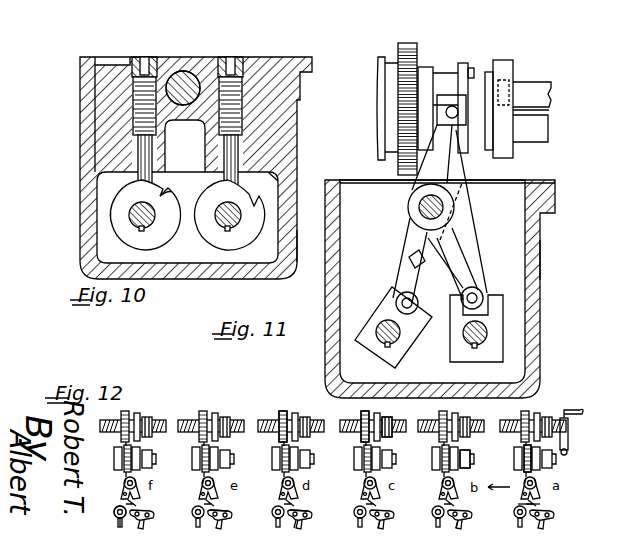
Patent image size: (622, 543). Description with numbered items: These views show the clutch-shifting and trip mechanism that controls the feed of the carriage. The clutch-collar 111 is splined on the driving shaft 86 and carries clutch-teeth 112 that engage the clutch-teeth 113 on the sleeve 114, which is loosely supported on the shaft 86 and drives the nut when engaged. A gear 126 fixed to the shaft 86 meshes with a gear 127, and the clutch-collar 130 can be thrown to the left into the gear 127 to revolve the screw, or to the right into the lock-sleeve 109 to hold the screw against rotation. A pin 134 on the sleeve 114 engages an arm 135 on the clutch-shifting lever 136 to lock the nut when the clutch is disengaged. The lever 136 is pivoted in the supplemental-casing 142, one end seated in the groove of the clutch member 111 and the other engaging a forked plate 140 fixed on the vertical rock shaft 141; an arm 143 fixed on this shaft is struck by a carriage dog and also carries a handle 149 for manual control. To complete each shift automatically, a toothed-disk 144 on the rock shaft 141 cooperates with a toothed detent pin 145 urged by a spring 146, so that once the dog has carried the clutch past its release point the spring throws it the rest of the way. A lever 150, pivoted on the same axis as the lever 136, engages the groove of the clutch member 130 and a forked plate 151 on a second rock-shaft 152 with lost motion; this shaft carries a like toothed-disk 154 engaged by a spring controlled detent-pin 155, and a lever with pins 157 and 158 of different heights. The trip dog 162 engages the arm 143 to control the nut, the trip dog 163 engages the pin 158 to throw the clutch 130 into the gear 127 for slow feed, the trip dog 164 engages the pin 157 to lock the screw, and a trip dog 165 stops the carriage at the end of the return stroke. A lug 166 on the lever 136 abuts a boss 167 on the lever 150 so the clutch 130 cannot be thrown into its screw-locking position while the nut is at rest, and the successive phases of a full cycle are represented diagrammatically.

In FIG. 11, the driving shaft 86 is at (495, 128).
In FIG. 12, the driving shaft 86 is at (398, 438).
In FIG. 12, the lock-sleeve 109 is at (540, 420).
In FIG. 11, the clutch-collar 111 is at (420, 65).
In FIG. 12, the clutch-collar 111 is at (470, 470).
In FIG. 11, the clutch-teeth 112 is at (472, 68).
In FIG. 11, the clutch-teeth 113 is at (494, 64).
In FIG. 11, the sleeve 114 is at (510, 60).
In FIG. 12, the sleeve 114 is at (470, 470).
In FIG. 11, the gear 126 is at (398, 163).
In FIG. 12, the gear 127 is at (360, 414).
In FIG. 12, the clutch-collar 130 is at (290, 414).
In FIG. 11, the pin 134 is at (520, 104).
In FIG. 11, the arm 135 is at (510, 78).
In FIG. 11, the clutch-shifting lever 136 is at (406, 210).
In FIG. 11, the forked plate 140 is at (372, 315).
In FIG. 10, the rock shaft 141 is at (155, 228).
In FIG. 11, the rock shaft 141 is at (399, 353).
In FIG. 10, the supplemental-casing 142 is at (288, 260).
In FIG. 11, the supplemental-casing 142 is at (540, 262).
In FIG. 12, the arm 143 is at (129, 525).
In FIG. 10, the toothed-disk 144 is at (118, 202).
In FIG. 10, the detent pin 145 is at (157, 180).
In FIG. 10, the spring 146 is at (160, 135).
In FIG. 10, the handle 149 is at (160, 188).
In FIG. 12, the handle 149 is at (466, 526).
In FIG. 11, the lever 150 is at (463, 168).
In FIG. 11, the forked plate 151 is at (503, 314).
In FIG. 10, the rock-shaft 152 is at (221, 232).
In FIG. 11, the rock-shaft 152 is at (488, 334).
In FIG. 10, the toothed-disk 154 is at (268, 208).
In FIG. 10, the detent-pin 155 is at (280, 178).
In FIG. 12, the pin 157 is at (295, 525).
In FIG. 12, the pin 158 is at (385, 520).
In FIG. 12, the trip dog 162 is at (118, 505).
In FIG. 12, the trip dog 163 is at (230, 515).
In FIG. 12, the trip dog 164 is at (298, 500).
In FIG. 12, the trip dog 165 is at (522, 505).
In FIG. 11, the lug 166 is at (409, 263).
In FIG. 11, the boss 167 is at (437, 260).